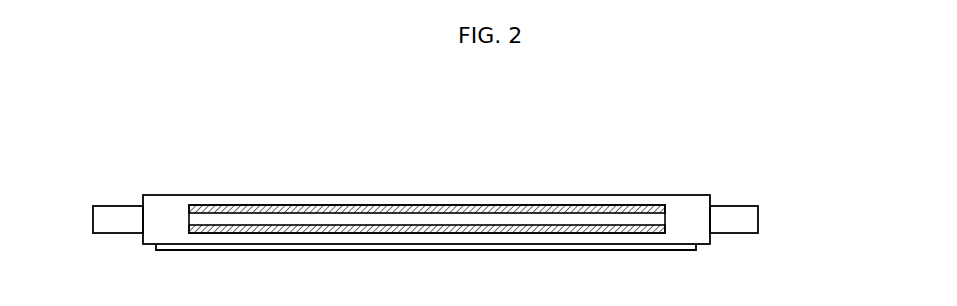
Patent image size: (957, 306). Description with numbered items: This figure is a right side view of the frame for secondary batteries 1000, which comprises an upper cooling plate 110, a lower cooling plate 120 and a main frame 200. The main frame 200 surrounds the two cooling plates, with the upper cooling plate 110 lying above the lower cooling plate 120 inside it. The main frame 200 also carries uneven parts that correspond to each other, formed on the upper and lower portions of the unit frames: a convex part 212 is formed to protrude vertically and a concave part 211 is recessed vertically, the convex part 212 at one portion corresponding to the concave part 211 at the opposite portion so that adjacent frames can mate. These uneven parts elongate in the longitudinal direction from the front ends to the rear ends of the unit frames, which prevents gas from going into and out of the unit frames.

The frame for secondary batteries 1000 is at (386, 132).
The main frame 200 is at (688, 195).
The concave part 211 is at (601, 195).
The convex part 212 is at (600, 250).
The upper cooling plate 110 is at (530, 205).
The lower cooling plate 120 is at (530, 233).